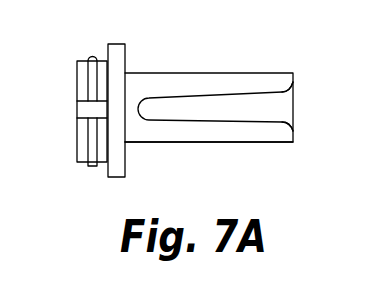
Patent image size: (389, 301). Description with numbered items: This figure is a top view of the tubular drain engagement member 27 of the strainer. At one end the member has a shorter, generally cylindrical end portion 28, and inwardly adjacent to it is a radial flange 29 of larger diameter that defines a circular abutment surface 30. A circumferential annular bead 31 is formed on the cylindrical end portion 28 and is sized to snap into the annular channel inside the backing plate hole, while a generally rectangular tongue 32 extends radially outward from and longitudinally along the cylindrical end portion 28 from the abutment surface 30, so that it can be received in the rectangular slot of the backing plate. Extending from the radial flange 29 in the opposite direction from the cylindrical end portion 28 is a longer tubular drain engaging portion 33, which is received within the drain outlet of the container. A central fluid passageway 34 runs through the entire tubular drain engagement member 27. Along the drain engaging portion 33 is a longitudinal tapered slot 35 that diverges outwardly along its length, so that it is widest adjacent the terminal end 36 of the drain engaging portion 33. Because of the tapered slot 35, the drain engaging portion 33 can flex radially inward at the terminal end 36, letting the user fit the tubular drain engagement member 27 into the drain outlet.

The tubular drain engagement member 27 is at (180, 73).
The generally cylindrical end portion 28 is at (82, 60).
The radial flange 29 is at (141, 89).
The circular abutment surface 30 is at (113, 44).
The circumferential annular bead 31 is at (92, 167).
The generally rectangular tongue 32 is at (85, 110).
The tubular drain engaging portion 33 is at (192, 143).
The central fluid passageway 34 is at (287, 115).
The longitudinal tapered slot 35 is at (217, 95).
The terminal end 36 is at (293, 98).